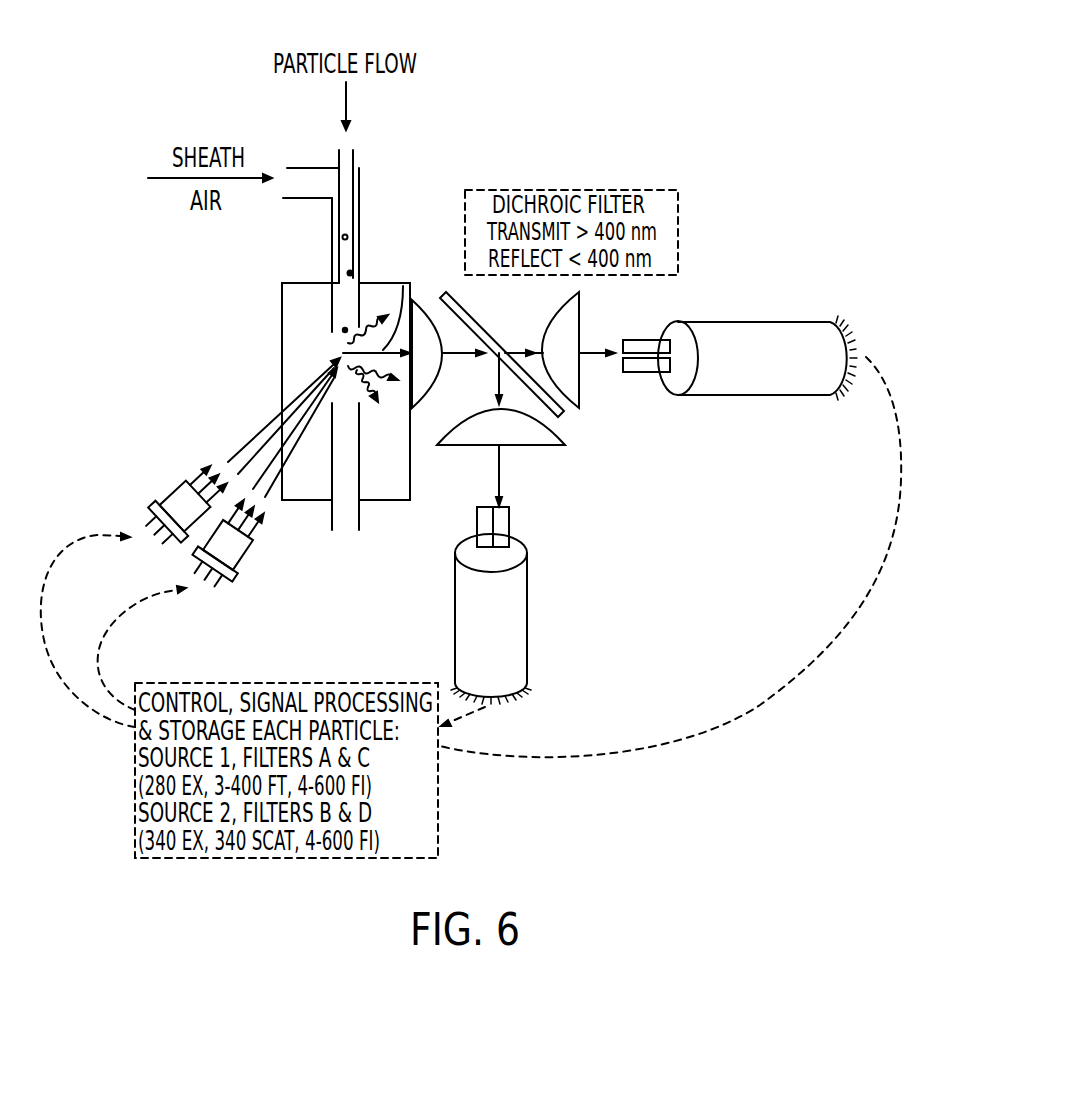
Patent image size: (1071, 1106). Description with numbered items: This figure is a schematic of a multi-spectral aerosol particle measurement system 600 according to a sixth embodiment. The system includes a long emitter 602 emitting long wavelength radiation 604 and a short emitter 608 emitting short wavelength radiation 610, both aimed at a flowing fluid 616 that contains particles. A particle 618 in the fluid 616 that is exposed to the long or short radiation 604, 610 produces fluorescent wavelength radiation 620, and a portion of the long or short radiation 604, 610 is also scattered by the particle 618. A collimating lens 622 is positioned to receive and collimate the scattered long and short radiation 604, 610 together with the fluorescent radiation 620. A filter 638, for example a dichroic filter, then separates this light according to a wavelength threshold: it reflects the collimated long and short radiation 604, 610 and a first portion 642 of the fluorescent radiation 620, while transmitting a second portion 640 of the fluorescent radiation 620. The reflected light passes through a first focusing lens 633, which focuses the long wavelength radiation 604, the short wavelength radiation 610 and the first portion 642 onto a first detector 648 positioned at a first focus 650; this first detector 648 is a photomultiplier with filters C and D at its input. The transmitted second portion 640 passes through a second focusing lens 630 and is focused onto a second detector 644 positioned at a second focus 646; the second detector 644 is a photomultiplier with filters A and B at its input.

The multi-spectral aerosol particle measurement system 600 is at (701, 84).
The long emitter 602 is at (253, 549).
The long wavelength radiation 604 is at (282, 470).
The short emitter 608 is at (180, 482).
The short wavelength radiation 610 is at (265, 432).
The flowing fluid 616 is at (345, 152).
The particle 618 is at (343, 353).
The fluorescent wavelength radiation 620 is at (405, 284).
The collimating lens 622 is at (420, 303).
The second focusing lens 630 is at (568, 313).
The first focusing lens 633 is at (525, 434).
The filter 638 is at (500, 342).
The second portion of fluorescent radiation 640 is at (593, 349).
The first portion of fluorescent radiation 642 is at (504, 476).
The second detector 644 is at (800, 330).
The second focus 646 is at (610, 360).
The first detector 648 is at (514, 675).
The first focus 650 is at (475, 527).